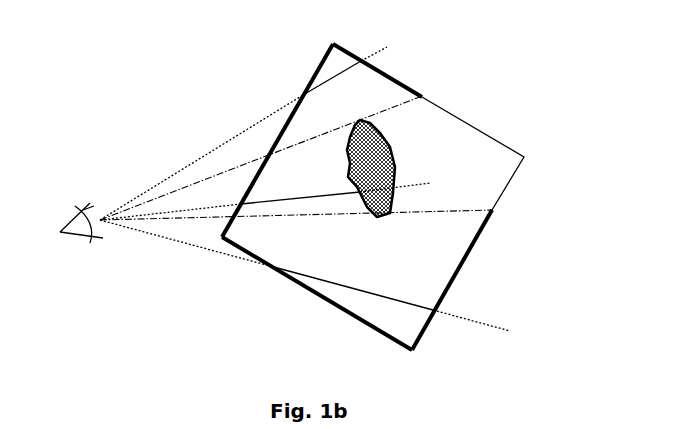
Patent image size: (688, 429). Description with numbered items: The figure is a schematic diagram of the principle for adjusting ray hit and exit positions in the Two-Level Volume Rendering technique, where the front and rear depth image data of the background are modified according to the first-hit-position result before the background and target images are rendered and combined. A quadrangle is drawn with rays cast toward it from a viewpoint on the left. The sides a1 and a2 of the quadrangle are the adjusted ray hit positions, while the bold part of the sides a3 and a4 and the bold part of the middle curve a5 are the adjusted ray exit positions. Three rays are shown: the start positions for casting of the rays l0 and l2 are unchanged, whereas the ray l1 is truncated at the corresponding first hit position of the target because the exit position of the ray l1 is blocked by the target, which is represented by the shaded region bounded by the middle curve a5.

The side of the quadrangle a1 is at (277, 140).
The side of the quadrangle a2 is at (317, 293).
The side of the quadrangle a3 is at (393, 73).
The side of the quadrangle a4 is at (467, 280).
The middle curve a5 is at (356, 168).
The ray l0 is at (252, 130).
The ray l1 is at (273, 195).
The ray l2 is at (305, 275).